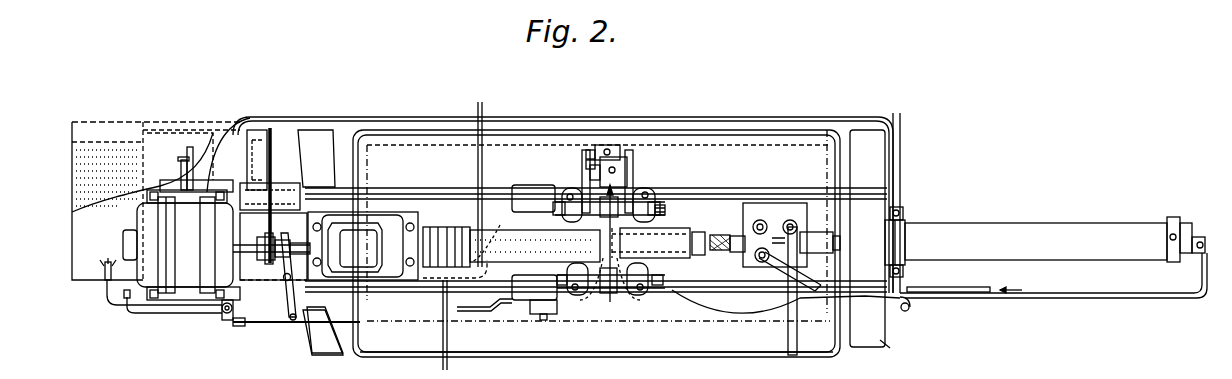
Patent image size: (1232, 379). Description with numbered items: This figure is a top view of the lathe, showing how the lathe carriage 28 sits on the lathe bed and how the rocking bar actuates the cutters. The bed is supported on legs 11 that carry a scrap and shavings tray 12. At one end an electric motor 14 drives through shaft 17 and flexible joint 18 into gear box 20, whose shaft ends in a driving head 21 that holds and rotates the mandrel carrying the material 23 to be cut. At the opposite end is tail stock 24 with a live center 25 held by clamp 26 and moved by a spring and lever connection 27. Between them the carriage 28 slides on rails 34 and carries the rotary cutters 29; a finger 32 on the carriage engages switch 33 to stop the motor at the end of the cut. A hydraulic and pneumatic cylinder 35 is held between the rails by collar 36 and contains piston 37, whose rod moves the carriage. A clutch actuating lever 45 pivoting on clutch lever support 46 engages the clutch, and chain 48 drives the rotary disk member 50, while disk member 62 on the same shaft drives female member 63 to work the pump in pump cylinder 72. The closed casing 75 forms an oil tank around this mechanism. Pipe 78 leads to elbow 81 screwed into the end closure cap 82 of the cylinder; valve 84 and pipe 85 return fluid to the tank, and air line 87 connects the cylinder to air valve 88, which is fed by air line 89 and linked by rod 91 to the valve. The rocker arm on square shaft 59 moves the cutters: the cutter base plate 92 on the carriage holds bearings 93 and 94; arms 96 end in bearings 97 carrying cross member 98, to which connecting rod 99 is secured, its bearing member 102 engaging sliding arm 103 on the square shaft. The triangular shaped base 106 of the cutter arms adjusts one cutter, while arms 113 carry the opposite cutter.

The legs 11 is at (314, 163).
The scrap and shavings tray 12 is at (820, 130).
The electric motor 14 is at (145, 216).
The shaft 17 is at (260, 256).
The flexible joint 18 is at (268, 238).
The gear box 20 is at (363, 246).
The driving head 21 is at (460, 227).
The material to be cut 23 is at (497, 252).
The tail stock 24 is at (753, 267).
The live center 25 is at (718, 234).
The clamp 26 is at (812, 285).
The spring and lever connection 27 is at (800, 231).
The lathe carriage 28 is at (590, 296).
The rotary cutters 29 is at (610, 298).
The finger 32 is at (484, 313).
The switch 33 is at (325, 330).
The rails 34 is at (898, 208).
The hydraulic and pneumatic cylinder 35 is at (1058, 226).
The collar 36 is at (898, 238).
The piston 37 is at (545, 320).
The clutch actuating lever 45 is at (289, 316).
The clutch lever support 46 is at (283, 281).
The chain 48 is at (273, 150).
The rotary disk member 50 is at (252, 130).
The square shaft 59 is at (700, 195).
The disk member 62 is at (187, 156).
The female member 63 is at (181, 162).
The pump cylinder 72 is at (712, 353).
The closed casing 75 is at (118, 120).
The pipe 78 is at (170, 314).
The elbow 81 is at (1204, 254).
The end closure cap 82 is at (1174, 217).
The valve 84 is at (222, 312).
The pipe 85 is at (118, 307).
The air line 87 is at (800, 316).
The air valve 88 is at (911, 307).
The air line 89 is at (965, 290).
The rod 91 is at (612, 323).
The cutter base plate 92 is at (665, 224).
The bearings 93 is at (558, 210).
The bearings 94 is at (560, 276).
The arms 96 is at (632, 182).
The bearings 97 is at (627, 170).
The cross member 98 is at (628, 160).
The connecting rod 99 is at (612, 148).
The bearing member 102 is at (590, 150).
The sliding arm 103 is at (586, 175).
The triangular shaped base 106 is at (660, 205).
The arms 113 is at (658, 307).